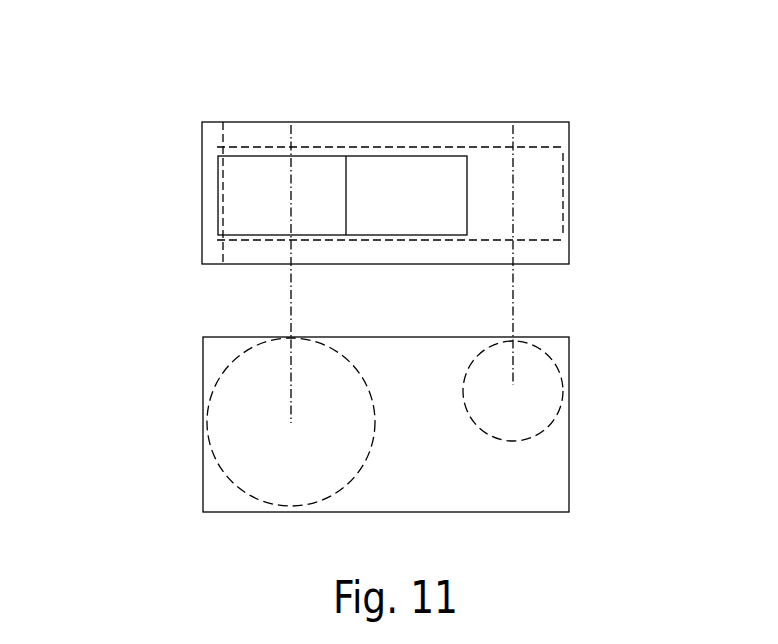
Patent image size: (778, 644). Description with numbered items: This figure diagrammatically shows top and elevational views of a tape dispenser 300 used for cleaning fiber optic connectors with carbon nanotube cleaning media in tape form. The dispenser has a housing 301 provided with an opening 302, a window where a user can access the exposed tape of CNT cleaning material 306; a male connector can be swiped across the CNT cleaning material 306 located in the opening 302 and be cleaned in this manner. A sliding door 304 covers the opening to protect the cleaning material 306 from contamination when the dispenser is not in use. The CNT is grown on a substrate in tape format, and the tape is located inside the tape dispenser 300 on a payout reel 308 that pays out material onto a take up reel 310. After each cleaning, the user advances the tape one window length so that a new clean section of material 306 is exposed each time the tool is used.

The tape dispenser 300 is at (370, 266).
The housing 301 is at (383, 266).
The opening 302 is at (352, 180).
The sliding door 304 is at (280, 205).
The tape of CNT cleaning material 306 is at (402, 346).
The payout reel 308 is at (538, 379).
The take up reel 310 is at (262, 411).